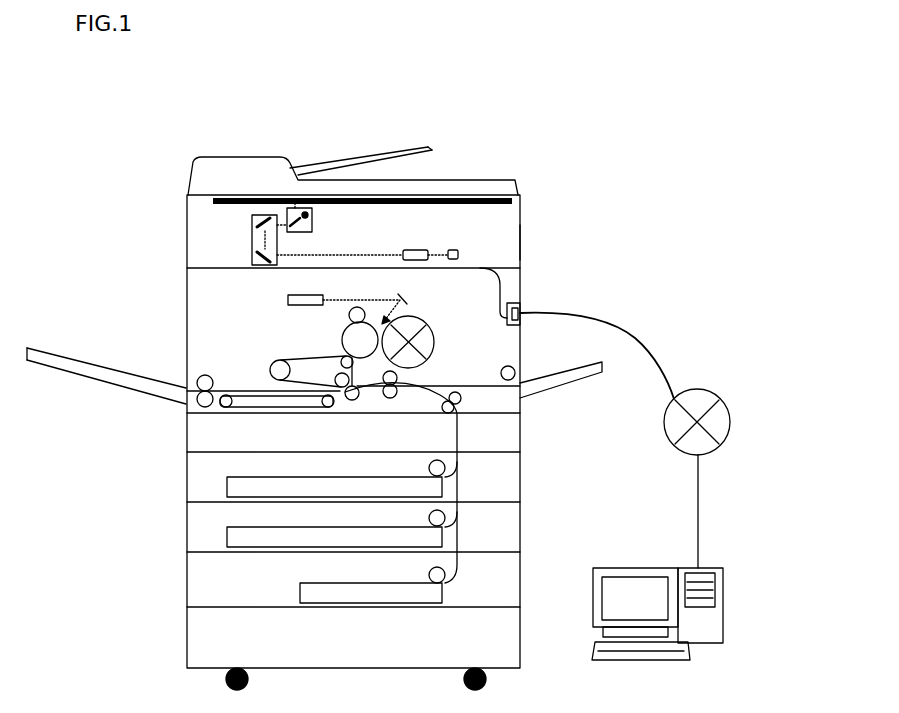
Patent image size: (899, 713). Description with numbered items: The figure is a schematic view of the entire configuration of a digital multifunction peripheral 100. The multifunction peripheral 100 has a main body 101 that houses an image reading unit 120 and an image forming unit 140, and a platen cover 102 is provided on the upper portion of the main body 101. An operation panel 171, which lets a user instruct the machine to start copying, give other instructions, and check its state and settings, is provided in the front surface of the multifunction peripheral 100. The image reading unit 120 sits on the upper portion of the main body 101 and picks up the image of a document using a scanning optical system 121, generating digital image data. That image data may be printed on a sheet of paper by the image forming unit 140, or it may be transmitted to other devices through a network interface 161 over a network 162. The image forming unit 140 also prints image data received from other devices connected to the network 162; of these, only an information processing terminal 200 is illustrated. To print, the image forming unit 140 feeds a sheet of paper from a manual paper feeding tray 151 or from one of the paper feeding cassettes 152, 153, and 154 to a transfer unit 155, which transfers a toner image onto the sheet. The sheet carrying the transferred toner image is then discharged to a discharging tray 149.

The multifunction peripheral 100 is at (516, 99).
The main body 101 is at (170, 276).
The platen cover 102 is at (168, 157).
The image reading unit 120 is at (522, 243).
The scanning optical system 121 is at (512, 216).
The image forming unit 140 is at (522, 278).
The discharging tray 149 is at (46, 352).
The manual paper feeding tray 151 is at (557, 387).
The paper feeding cassette 152 is at (230, 486).
The paper feeding cassette 153 is at (230, 538).
The paper feeding cassette 154 is at (300, 593).
The transfer unit 155 is at (352, 398).
The network interface 161 is at (522, 306).
The network 162 is at (713, 390).
The operation panel 171 is at (518, 185).
The information processing terminal 200 is at (703, 645).